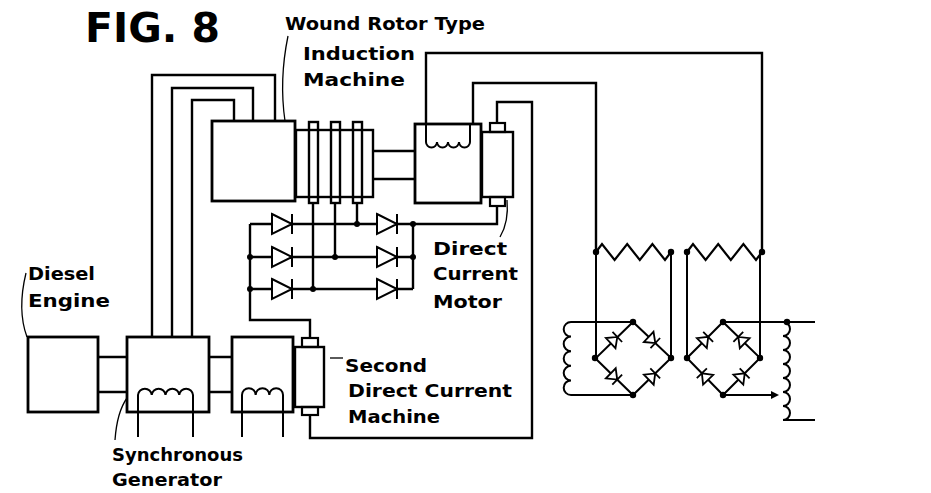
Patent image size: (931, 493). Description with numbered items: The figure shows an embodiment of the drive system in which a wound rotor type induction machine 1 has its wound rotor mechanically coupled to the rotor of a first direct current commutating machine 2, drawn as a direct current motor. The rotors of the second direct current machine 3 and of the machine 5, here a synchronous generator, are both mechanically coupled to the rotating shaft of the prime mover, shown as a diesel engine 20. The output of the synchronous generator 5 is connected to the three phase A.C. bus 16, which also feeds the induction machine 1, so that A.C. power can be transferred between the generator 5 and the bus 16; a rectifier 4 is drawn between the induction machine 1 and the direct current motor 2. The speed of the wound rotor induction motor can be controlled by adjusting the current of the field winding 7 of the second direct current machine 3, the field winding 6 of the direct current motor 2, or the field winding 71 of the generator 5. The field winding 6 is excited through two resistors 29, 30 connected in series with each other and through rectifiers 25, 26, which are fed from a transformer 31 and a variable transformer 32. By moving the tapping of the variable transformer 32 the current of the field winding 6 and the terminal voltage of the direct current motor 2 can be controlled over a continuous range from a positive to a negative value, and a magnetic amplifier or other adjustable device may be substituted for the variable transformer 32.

The main induction machine 1 is at (313, 162).
The first direct current commutating machine 2 is at (421, 270).
The second direct current commutating machine 3 is at (278, 376).
The rectifier 4 is at (331, 270).
The synchronous generator 5 is at (179, 374).
The field winding 6 is at (445, 136).
The field winding 7 is at (252, 408).
The field winding 71 is at (150, 406).
The three phase A.C. bus 16 is at (192, 160).
The diesel engine 20 is at (77, 374).
The rectifier 25 is at (723, 339).
The rectifier 26 is at (633, 339).
The resistor 29 is at (709, 246).
The resistor 30 is at (634, 246).
The transformer 31 is at (561, 362).
The variable transformer 32 is at (791, 338).